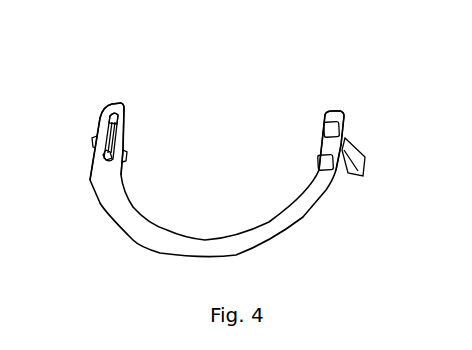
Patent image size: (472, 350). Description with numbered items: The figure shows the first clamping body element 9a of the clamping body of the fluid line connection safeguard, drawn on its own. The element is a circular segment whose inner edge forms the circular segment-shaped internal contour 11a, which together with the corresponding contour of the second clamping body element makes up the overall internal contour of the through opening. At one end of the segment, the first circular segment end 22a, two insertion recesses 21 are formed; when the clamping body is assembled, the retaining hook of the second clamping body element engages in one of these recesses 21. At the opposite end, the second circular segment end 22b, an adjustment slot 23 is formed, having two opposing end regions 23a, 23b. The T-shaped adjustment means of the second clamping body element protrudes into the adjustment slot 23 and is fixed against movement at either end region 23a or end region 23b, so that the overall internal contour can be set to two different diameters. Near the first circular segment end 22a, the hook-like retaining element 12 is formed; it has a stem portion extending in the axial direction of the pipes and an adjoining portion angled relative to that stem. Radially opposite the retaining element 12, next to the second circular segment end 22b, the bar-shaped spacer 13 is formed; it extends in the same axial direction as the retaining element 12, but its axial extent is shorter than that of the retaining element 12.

The first clamping body element 9a is at (221, 65).
The circular segment-shaped internal contour 11a is at (205, 233).
The second circular segment end 22b is at (120, 95).
The first circular segment end 22a is at (333, 104).
The adjustment slot 23 is at (109, 140).
The end region of the adjustment slot 23a is at (100, 160).
The end region of the adjustment slot 23b is at (107, 111).
The spacer 13 is at (127, 160).
The insertion recesses 21 is at (324, 127).
The retaining element 12 is at (352, 177).